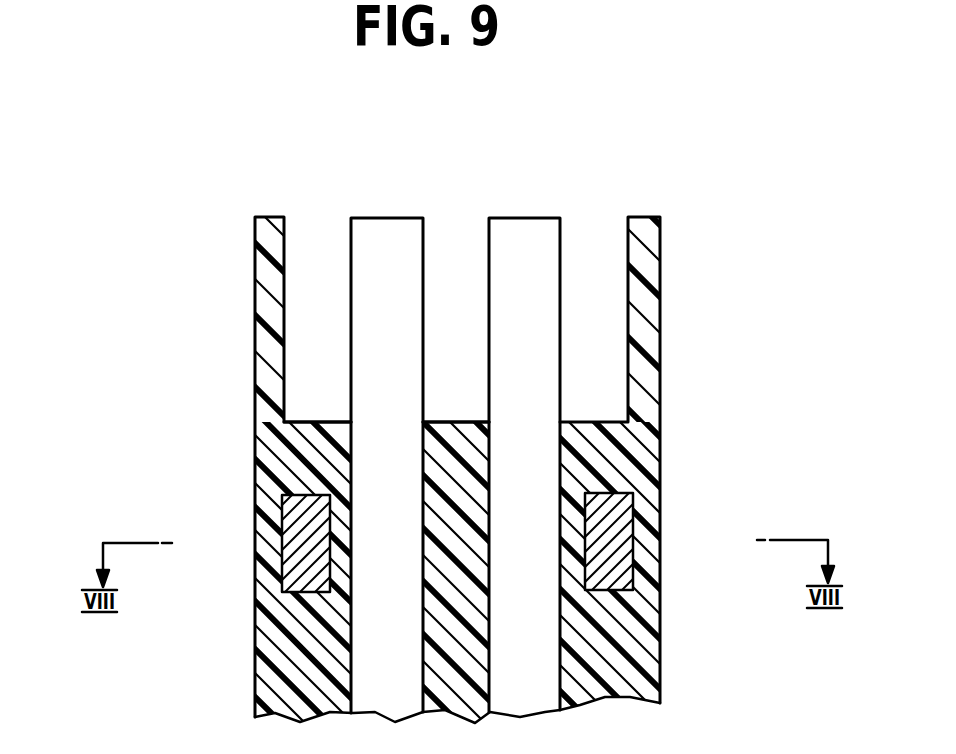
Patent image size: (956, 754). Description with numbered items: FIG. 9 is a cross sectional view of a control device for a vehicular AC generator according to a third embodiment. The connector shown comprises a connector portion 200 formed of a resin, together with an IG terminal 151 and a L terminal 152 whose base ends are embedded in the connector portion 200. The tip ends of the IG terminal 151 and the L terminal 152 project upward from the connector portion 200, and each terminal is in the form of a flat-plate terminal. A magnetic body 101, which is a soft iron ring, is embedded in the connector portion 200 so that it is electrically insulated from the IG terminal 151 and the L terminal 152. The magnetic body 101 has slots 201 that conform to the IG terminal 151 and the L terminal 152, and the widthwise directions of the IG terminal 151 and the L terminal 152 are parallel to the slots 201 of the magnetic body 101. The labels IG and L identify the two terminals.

The connector portion 200 is at (620, 662).
The IG terminal 151 is at (376, 233).
The L terminal 152 is at (527, 238).
The slot 201 is at (337, 567).
The magnetic body 101 is at (617, 522).
The inner gap IG is at (371, 296).
The spacing L between terminals L is at (508, 288).